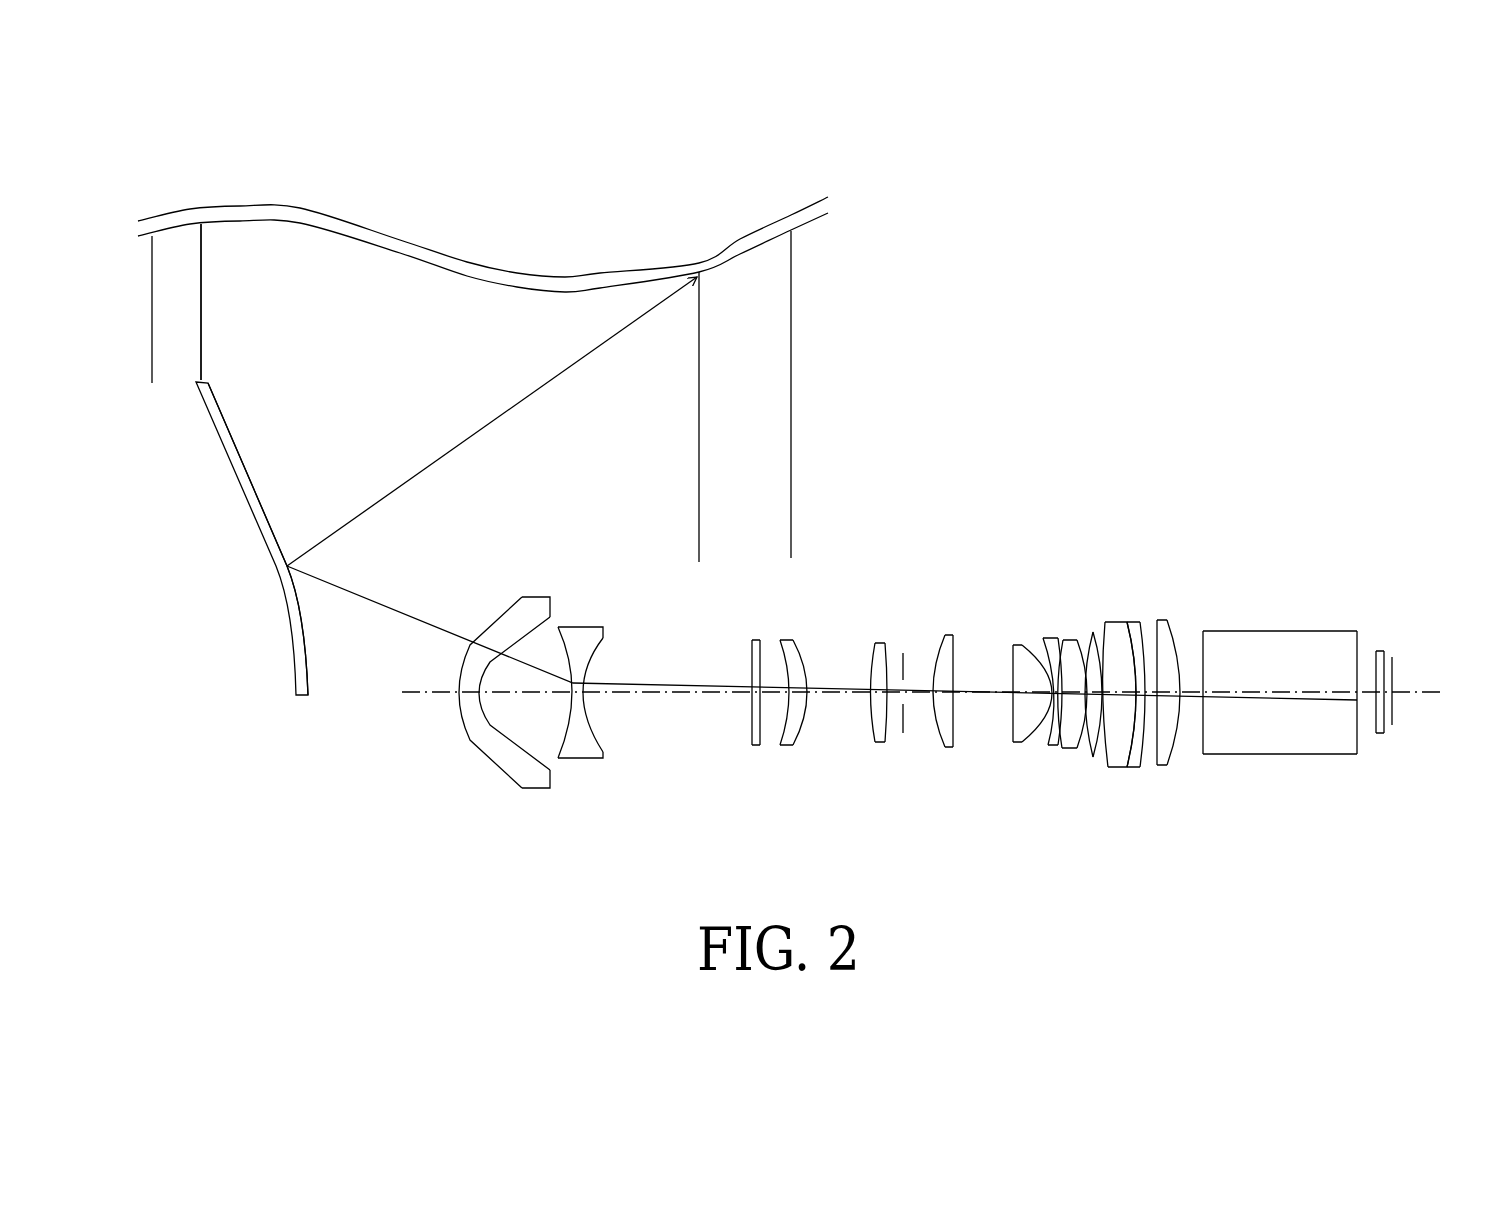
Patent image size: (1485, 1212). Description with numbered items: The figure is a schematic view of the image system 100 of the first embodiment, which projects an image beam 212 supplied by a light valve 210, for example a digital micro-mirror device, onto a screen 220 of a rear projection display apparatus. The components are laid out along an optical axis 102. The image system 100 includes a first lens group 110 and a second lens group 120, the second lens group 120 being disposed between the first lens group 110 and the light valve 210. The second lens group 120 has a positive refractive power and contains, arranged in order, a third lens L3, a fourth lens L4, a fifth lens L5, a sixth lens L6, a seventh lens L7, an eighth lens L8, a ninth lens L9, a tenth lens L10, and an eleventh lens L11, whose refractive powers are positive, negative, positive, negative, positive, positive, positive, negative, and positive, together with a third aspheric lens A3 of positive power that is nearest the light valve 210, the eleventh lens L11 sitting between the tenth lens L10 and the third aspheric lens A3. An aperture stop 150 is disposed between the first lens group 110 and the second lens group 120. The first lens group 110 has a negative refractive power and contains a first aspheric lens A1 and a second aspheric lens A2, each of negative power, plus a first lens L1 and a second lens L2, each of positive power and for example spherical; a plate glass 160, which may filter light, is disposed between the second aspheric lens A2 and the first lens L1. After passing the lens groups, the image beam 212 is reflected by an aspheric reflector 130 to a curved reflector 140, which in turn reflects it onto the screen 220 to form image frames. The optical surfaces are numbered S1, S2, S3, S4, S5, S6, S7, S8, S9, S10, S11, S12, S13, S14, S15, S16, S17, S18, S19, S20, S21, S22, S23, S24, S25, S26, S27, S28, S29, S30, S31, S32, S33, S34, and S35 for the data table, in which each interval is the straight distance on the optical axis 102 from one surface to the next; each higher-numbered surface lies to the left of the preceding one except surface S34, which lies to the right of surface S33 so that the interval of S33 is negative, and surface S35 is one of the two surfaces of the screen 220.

The image system 100 is at (1074, 391).
The optical axis 102 is at (410, 692).
The first lens group 110 is at (601, 723).
The second lens group 120 is at (1107, 675).
The aspheric reflector 130 is at (261, 586).
The curved reflector 140 is at (791, 360).
The aperture stop 150 is at (891, 611).
The plate glass 160 is at (752, 682).
The light valve 210 is at (1431, 680).
The image beam 212 is at (1349, 697).
The screen 220 is at (466, 364).
The first aspheric lens A1 is at (470, 716).
The second aspheric lens A2 is at (615, 698).
The third aspheric lens A3 is at (1296, 684).
The first lens L1 is at (714, 700).
The second lens L2 is at (783, 704).
The third lens L3 is at (856, 684).
The fourth lens L4 is at (923, 673).
The fifth lens L5 is at (984, 713).
The sixth lens L6 is at (1010, 685).
The seventh lens L7 is at (1035, 653).
The eighth lens L8 is at (1094, 660).
The ninth lens L9 is at (1162, 650).
The tenth lens L10 is at (1206, 679).
The eleventh lens L11 is at (1237, 703).
The surface S1 is at (1393, 716).
The surface S2 is at (1384, 722).
The surface S3 is at (1377, 667).
The surface S4 is at (1358, 638).
The surface S5 is at (1206, 653).
The surface S6 is at (1183, 652).
The surface S7 is at (1172, 636).
The surface S8 is at (1162, 628).
The surface S9 is at (1150, 631).
The surface S10 is at (1138, 629).
The surface S11 is at (1120, 630).
The surface S12 is at (1107, 632).
The surface S13 is at (1094, 630).
The surface S14 is at (1084, 636).
The surface S15 is at (1074, 638).
The surface S16 is at (1048, 651).
The surface S17 is at (1038, 656).
The surface S18 is at (1028, 661).
The surface S19 is at (1012, 667).
The surface S20 is at (952, 684).
The surface S21 is at (934, 651).
The surface S22 is at (904, 676).
The surface S23 is at (885, 651).
The surface S24 is at (869, 681).
The surface S25 is at (807, 660).
The surface S26 is at (783, 669).
The surface S27 is at (762, 649).
The surface S28 is at (748, 656).
The surface S29 is at (597, 652).
The surface S30 is at (569, 650).
The surface S31 is at (483, 721).
The surface S32 is at (452, 713).
The surface S33 is at (313, 687).
The surface S34 is at (692, 305).
The surface S35 is at (204, 262).